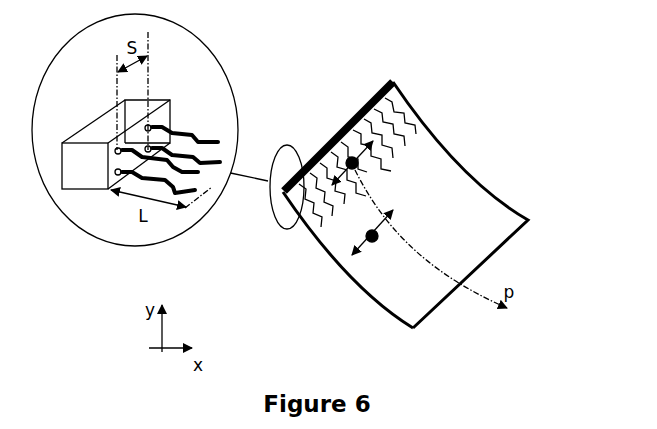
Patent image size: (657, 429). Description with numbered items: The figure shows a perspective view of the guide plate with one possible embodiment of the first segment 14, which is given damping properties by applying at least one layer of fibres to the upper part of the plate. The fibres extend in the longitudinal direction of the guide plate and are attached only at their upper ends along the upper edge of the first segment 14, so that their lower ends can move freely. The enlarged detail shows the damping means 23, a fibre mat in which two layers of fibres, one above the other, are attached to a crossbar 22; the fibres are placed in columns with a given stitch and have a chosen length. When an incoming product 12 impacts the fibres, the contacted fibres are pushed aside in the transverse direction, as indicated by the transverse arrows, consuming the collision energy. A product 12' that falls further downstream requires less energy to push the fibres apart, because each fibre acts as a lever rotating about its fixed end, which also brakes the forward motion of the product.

The product 12 is at (321, 139).
The product 12' is at (372, 284).
The first segment 14 is at (407, 103).
The crossbar 22 is at (116, 144).
The damping means 23 is at (203, 43).